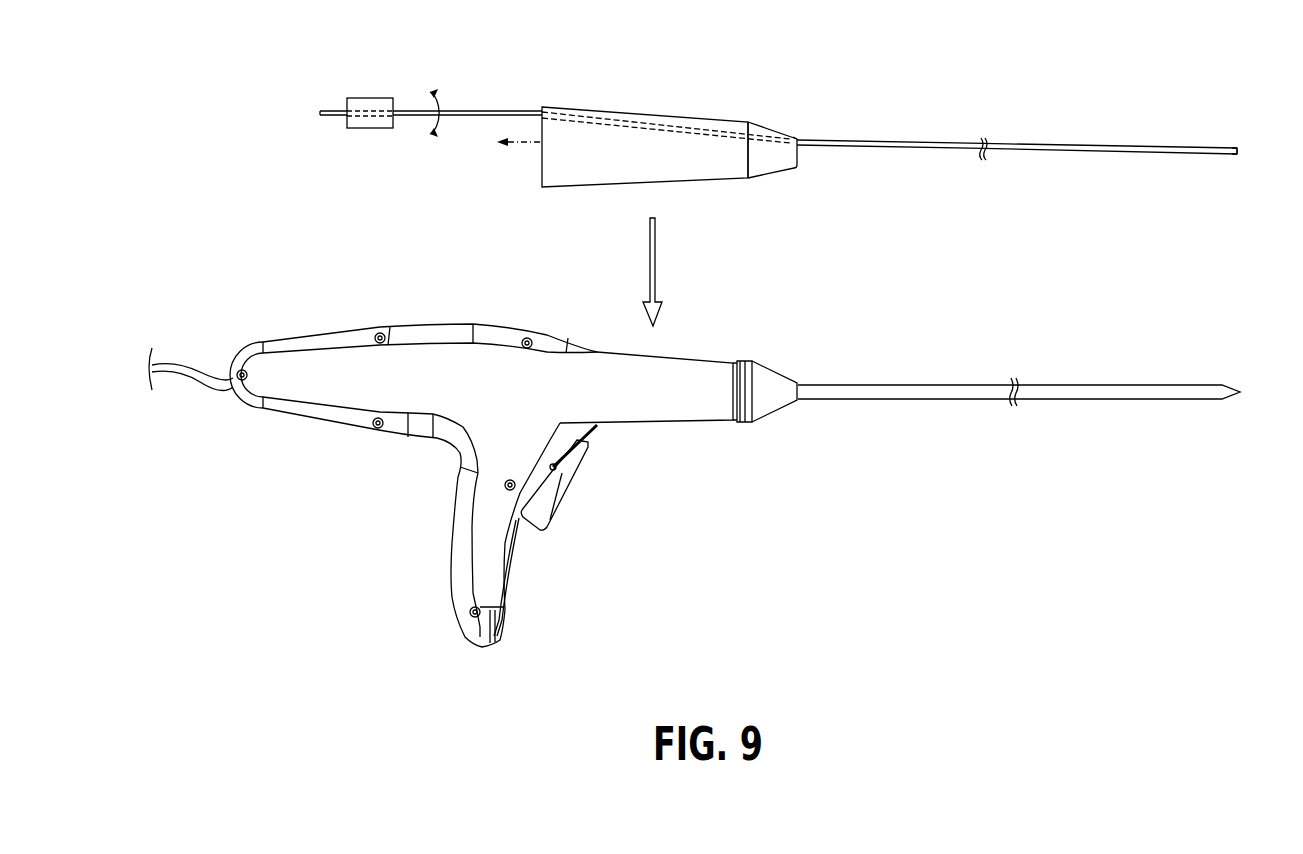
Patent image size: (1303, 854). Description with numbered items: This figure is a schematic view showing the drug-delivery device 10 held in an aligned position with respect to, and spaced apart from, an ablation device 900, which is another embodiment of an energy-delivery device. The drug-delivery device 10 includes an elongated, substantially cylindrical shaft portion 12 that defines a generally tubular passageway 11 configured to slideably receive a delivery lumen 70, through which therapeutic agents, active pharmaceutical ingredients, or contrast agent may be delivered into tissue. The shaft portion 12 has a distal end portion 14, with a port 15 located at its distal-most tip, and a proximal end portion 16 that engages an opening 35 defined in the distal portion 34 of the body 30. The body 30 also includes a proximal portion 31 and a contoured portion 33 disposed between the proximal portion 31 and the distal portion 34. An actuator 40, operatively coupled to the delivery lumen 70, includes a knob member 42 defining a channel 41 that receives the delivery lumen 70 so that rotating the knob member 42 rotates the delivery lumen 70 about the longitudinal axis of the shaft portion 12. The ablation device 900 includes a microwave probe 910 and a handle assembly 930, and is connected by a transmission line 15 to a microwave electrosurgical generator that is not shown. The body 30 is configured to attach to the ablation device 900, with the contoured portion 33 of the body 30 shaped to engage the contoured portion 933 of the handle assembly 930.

The drug-delivery device 10 is at (970, 78).
The passageway 11 is at (906, 143).
The shaft portion 12 is at (1015, 134).
The distal end portion 14 is at (1235, 147).
The port 15 is at (1248, 144).
The proximal end portion 16 is at (803, 147).
The body 30 is at (686, 90).
The proximal portion 31 is at (676, 183).
The contoured portion 33 is at (750, 186).
The distal portion 34 is at (770, 128).
The opening 35 is at (799, 132).
The actuator 40 is at (376, 82).
The channel 41 is at (386, 136).
The knob member 42 is at (358, 130).
The delivery lumen 70 is at (333, 111).
The ablation device 900 is at (296, 304).
The microwave probe 910 is at (962, 383).
The handle assembly 930 is at (687, 342).
The contoured portion 933 is at (746, 432).